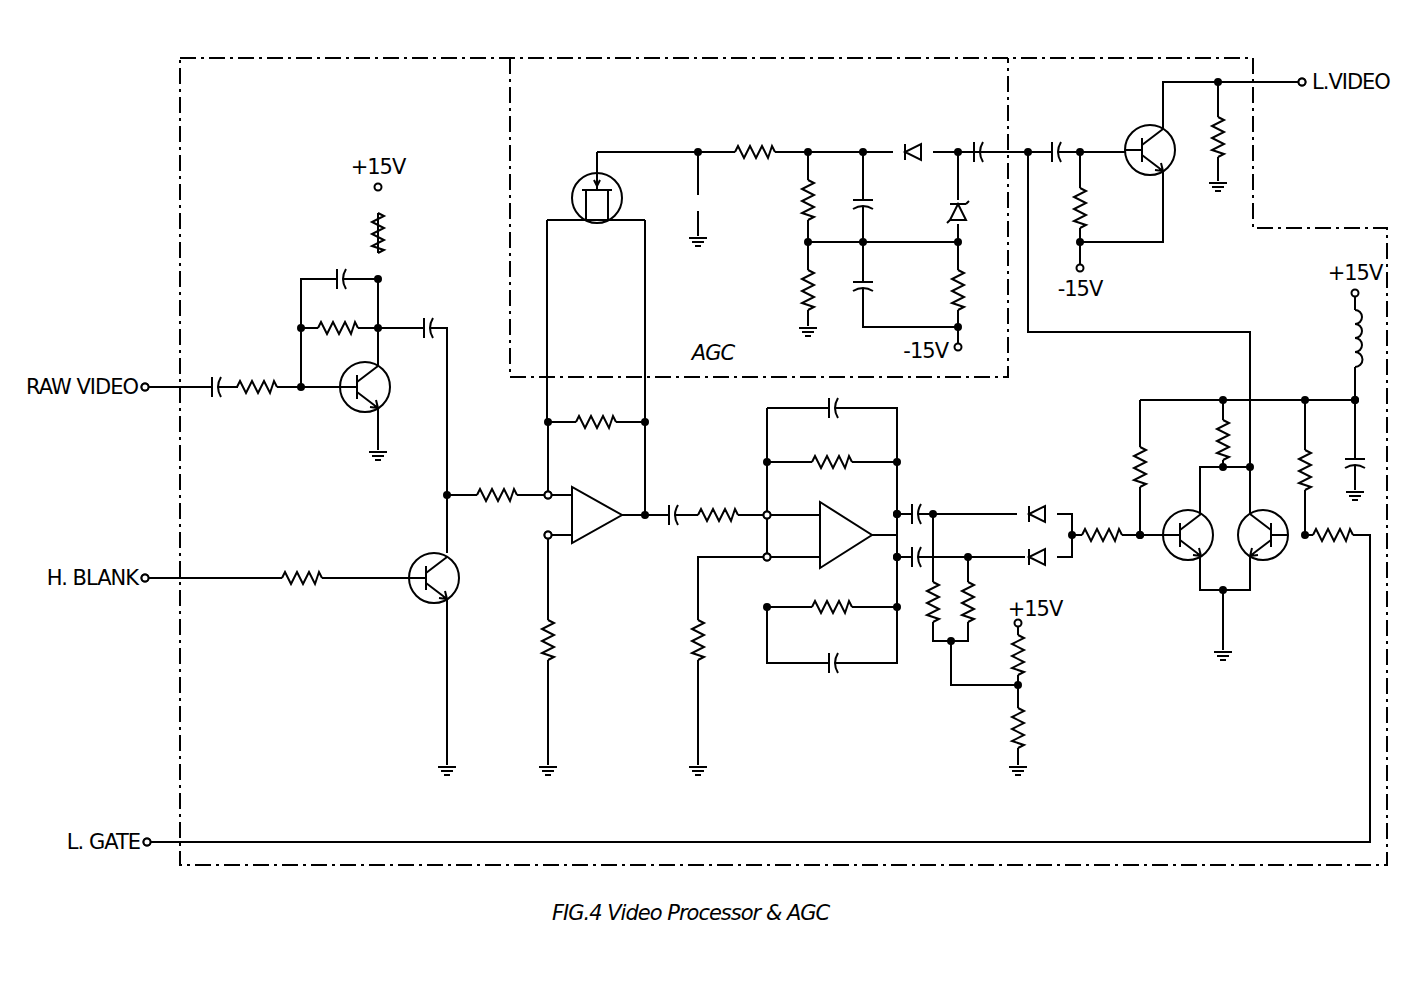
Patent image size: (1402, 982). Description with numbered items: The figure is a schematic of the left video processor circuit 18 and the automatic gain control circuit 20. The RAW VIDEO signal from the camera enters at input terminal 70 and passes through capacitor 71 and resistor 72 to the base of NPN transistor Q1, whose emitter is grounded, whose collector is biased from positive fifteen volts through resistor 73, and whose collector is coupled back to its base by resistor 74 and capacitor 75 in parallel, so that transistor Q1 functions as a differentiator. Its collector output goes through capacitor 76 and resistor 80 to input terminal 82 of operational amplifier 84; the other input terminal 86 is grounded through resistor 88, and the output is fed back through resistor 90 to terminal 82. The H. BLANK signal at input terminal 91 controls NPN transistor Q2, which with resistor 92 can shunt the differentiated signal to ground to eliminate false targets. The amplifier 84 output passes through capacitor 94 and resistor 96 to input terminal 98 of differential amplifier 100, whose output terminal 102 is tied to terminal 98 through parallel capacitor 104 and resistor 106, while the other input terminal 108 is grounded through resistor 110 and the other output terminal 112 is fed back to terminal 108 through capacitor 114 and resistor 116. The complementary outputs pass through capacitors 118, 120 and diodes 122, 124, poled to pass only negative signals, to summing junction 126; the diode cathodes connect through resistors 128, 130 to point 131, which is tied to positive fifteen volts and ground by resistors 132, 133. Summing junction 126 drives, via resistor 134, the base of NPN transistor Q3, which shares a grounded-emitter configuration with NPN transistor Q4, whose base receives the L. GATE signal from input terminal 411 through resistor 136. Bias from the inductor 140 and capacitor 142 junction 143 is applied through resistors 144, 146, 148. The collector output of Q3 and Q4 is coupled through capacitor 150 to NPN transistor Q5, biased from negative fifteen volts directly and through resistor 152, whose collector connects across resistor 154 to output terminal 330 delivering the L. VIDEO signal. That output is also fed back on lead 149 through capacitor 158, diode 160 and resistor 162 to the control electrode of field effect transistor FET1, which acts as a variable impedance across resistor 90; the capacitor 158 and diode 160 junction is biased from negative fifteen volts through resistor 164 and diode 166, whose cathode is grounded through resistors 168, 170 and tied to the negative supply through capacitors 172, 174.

The left video processor circuit 18 is at (492, 94).
The automatic gain control circuit 20 is at (557, 92).
The input terminal 70 is at (145, 383).
The capacitor 71 is at (208, 378).
The resistor 72 is at (266, 380).
The resistor 73 is at (384, 237).
The resistor 74 is at (345, 326).
The capacitor 75 is at (334, 272).
The capacitor 76 is at (436, 313).
The resistor 80 is at (491, 490).
The input terminal 82 is at (544, 490).
The operational amplifier 84 is at (604, 513).
The input terminal 86 is at (538, 525).
The resistor 88 is at (552, 650).
The resistor 90 is at (606, 425).
The input terminal 91 is at (147, 574).
The resistor 92 is at (316, 573).
The capacitor 94 is at (676, 507).
The resistor 96 is at (726, 508).
The input terminal 98 is at (770, 511).
The differential amplifier 100 is at (820, 535).
The output terminal 102 is at (896, 509).
The capacitor 104 is at (838, 412).
The resistor 106 is at (826, 458).
The input terminal 108 is at (770, 561).
The resistor 110 is at (702, 654).
The output terminal 112 is at (895, 561).
The capacitor 114 is at (838, 668).
The resistor 116 is at (842, 612).
The capacitor 118 is at (920, 506).
The capacitor 120 is at (912, 548).
The diode 122 is at (1046, 504).
The diode 124 is at (1045, 562).
The summing junction 126 is at (1075, 530).
The resistor 128 is at (932, 622).
The resistor 130 is at (974, 600).
The point 131 is at (943, 650).
The resistor 132 is at (1025, 660).
The resistor 133 is at (1025, 722).
The resistor 134 is at (1126, 541).
The resistor 136 is at (1338, 542).
The inductor 140 is at (1348, 336).
The capacitor 142 is at (1347, 454).
The junction 143 is at (1352, 398).
The resistor 144 is at (1134, 459).
The resistor 146 is at (1220, 428).
The resistor 148 is at (1302, 454).
The lead 149 is at (1130, 332).
The capacitor 150 is at (1058, 144).
The resistor 152 is at (1088, 212).
The resistor 154 is at (1214, 120).
The capacitor 158 is at (972, 144).
The diode 160 is at (926, 130).
The resistor 162 is at (768, 146).
The resistor 164 is at (952, 278).
The diode 166 is at (950, 216).
The resistor 168 is at (801, 196).
The resistor 170 is at (801, 282).
The capacitor 172 is at (870, 200).
The capacitor 174 is at (868, 292).
The output terminal 330 is at (1296, 90).
The input terminal 411 is at (150, 838).
The NPN transistor Q1 is at (389, 376).
The NPN transistor Q2 is at (459, 570).
The NPN transistor Q3 is at (1190, 512).
The NPN transistor Q4 is at (1276, 504).
The NPN transistor Q5 is at (1130, 126).
The field effect transistor FET1 is at (622, 186).